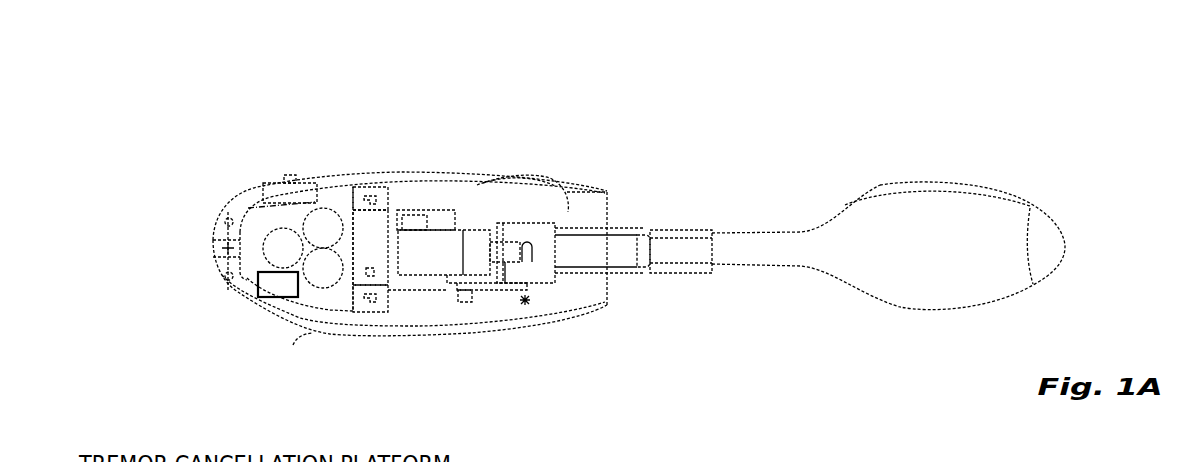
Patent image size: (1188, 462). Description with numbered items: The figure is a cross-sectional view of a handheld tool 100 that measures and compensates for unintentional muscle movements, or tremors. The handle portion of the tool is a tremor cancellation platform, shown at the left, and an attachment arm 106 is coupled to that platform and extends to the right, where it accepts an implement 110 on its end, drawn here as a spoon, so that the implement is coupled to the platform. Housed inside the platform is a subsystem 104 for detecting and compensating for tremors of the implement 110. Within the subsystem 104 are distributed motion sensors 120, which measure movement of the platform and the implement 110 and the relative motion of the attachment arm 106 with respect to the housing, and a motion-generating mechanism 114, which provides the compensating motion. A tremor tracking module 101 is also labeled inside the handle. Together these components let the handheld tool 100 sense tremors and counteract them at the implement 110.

The handheld tool 100 is at (179, 136).
The tremor tracking module 101 is at (260, 293).
The subsystem 104 is at (531, 205).
The attachment arm 106 is at (733, 282).
The implement 110 is at (1003, 274).
The motion-generating mechanism 114 is at (412, 224).
The distributed motion sensors 120 is at (442, 308).